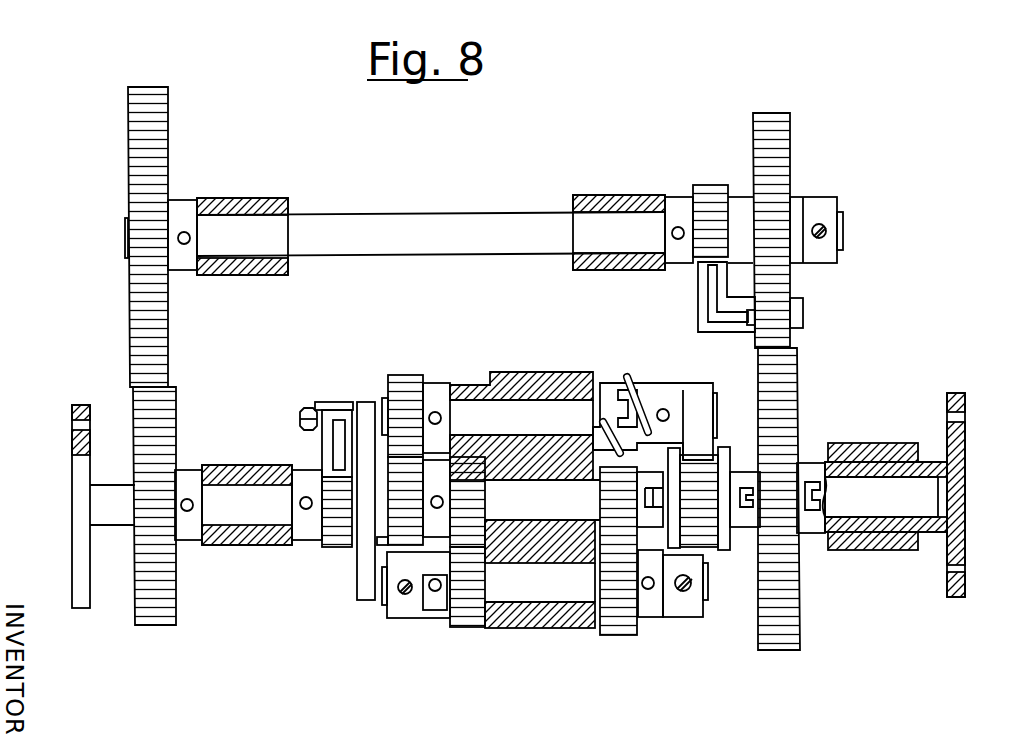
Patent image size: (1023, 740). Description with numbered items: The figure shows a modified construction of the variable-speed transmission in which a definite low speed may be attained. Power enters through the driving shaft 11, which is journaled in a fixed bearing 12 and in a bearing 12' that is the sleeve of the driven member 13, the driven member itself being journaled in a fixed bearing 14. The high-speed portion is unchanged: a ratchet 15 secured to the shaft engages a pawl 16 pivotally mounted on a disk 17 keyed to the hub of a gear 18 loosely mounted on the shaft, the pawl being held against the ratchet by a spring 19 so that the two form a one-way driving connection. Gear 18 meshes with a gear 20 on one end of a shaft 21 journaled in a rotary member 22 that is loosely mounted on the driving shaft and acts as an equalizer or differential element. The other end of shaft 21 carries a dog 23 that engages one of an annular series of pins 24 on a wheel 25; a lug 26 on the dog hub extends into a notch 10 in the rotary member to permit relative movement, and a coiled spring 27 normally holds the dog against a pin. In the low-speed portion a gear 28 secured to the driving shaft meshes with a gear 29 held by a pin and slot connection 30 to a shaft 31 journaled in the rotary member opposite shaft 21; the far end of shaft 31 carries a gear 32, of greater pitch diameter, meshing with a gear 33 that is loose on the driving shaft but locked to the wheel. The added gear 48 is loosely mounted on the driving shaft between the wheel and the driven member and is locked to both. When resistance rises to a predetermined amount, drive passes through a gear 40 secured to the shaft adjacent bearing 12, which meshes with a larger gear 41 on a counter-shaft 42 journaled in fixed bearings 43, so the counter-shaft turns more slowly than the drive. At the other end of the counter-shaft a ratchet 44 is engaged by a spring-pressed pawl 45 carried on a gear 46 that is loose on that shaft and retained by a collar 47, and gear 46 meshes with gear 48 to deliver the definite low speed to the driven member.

The notch 10 is at (613, 420).
The driving shaft 11 is at (105, 507).
The bearing 12 is at (248, 484).
The bearing 12' is at (872, 457).
The driven member 13 is at (963, 400).
The fixed bearing 14 is at (872, 453).
The ratchet 15 is at (332, 537).
The pawl 16 is at (327, 448).
The disk 17 is at (362, 410).
The gear 18 is at (400, 528).
The spring 19 is at (335, 435).
The gear 20 is at (403, 398).
The shaft 21 is at (505, 415).
The rotary member 22 is at (510, 629).
The dog 23 is at (698, 402).
The pins 24 is at (710, 467).
The wheel 25 is at (723, 548).
The lug 26 is at (615, 418).
The coiled spring 27 is at (640, 412).
The gear 28 is at (462, 492).
The gear 29 is at (465, 610).
The pin and slot connection 30 is at (432, 588).
The shaft 31 is at (543, 578).
The gear 32 is at (620, 610).
The gear 33 is at (613, 517).
The gear 40 is at (155, 622).
The gear 41 is at (145, 103).
The counter-shaft 42 is at (411, 216).
The fixed bearings 43 is at (237, 200).
The ratchet 44 is at (711, 197).
The spring-pressed pawl 45 is at (697, 298).
The gear 46 is at (775, 128).
The collar 47 is at (823, 203).
The gear 48 is at (782, 625).